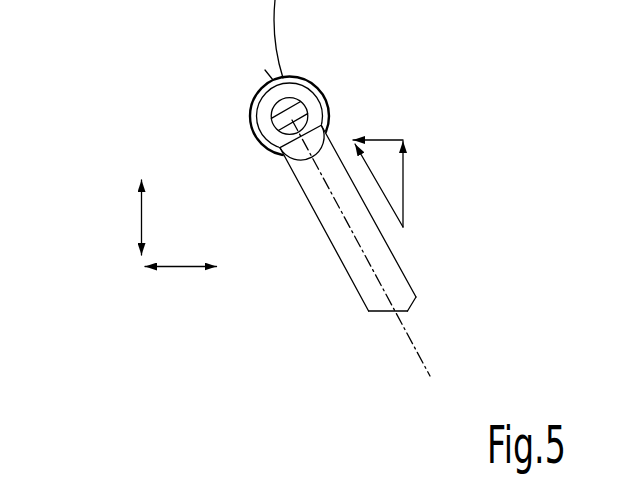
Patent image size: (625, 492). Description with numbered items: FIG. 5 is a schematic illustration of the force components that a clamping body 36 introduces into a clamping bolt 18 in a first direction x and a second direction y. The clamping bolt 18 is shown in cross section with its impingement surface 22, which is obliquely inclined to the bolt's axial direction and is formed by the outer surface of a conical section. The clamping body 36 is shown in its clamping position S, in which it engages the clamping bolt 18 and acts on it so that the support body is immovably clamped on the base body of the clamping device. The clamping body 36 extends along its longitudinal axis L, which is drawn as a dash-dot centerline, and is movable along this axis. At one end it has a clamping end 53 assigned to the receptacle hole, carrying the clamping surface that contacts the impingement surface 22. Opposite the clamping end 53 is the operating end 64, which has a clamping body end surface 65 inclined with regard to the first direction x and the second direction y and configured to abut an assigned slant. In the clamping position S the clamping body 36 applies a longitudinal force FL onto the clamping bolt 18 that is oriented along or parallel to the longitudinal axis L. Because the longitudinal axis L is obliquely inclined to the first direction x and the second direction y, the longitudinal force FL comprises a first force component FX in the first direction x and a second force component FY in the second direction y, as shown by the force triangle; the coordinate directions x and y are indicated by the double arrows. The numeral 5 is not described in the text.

The coupling arrangement 5 is at (440, 39).
The clamping bolt 18 is at (295, 116).
The impingement surface 22 is at (261, 100).
The clamping body 36 is at (348, 243).
The clamping end 53 is at (334, 133).
The operating end 64 is at (396, 283).
The clamping body end surface 65 is at (416, 305).
The longitudinal axis L is at (415, 346).
The clamping position S is at (285, 179).
The first force component FX is at (377, 136).
The second force component FY is at (405, 178).
The longitudinal force FL is at (371, 168).
The first direction x is at (178, 268).
The second direction y is at (140, 207).